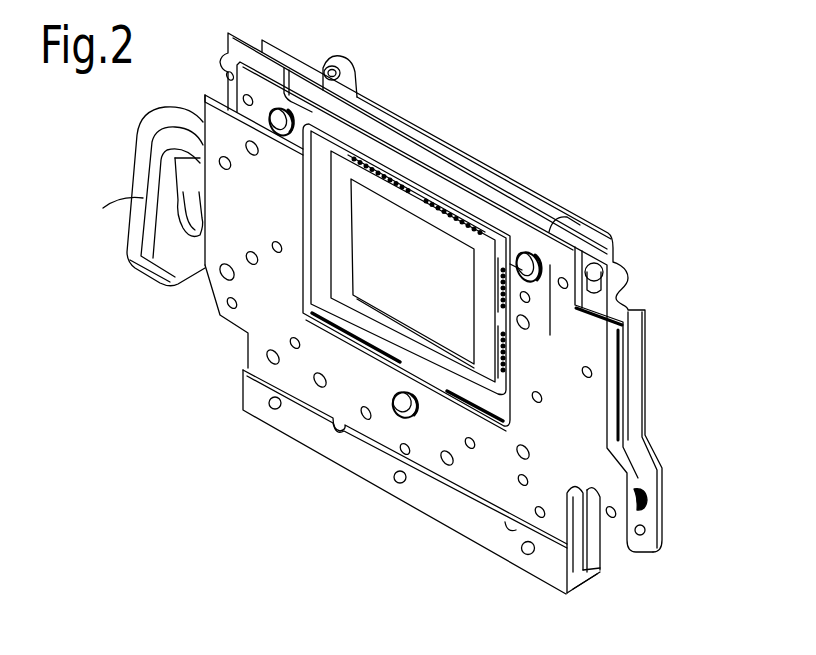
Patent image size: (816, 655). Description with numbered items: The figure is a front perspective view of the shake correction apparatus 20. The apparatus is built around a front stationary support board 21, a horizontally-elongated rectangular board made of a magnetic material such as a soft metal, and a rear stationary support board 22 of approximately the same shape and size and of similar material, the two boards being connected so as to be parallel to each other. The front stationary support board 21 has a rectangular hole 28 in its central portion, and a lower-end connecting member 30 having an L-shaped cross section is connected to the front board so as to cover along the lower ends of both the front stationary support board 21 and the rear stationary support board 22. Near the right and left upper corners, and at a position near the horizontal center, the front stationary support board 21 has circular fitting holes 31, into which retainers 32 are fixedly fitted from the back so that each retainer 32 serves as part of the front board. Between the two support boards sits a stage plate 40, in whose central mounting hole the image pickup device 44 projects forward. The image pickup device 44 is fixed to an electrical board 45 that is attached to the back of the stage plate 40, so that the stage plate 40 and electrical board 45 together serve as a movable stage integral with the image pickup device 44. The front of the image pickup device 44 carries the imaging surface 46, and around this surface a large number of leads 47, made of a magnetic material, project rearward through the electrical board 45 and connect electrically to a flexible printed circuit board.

The shake correction apparatus 20 is at (170, 408).
The front stationary support board 21 is at (588, 398).
The rear stationary support board 22 is at (643, 481).
The rectangular hole 28 is at (298, 138).
The lower-end connecting member 30 is at (478, 530).
The fitting hole 31 is at (278, 110).
The retainer 32 is at (281, 133).
The stage plate 40 is at (587, 237).
The image pickup device 44 is at (497, 253).
The electrical board 45 is at (320, 272).
The imaging surface 46 is at (410, 228).
The leads 47 is at (385, 168).